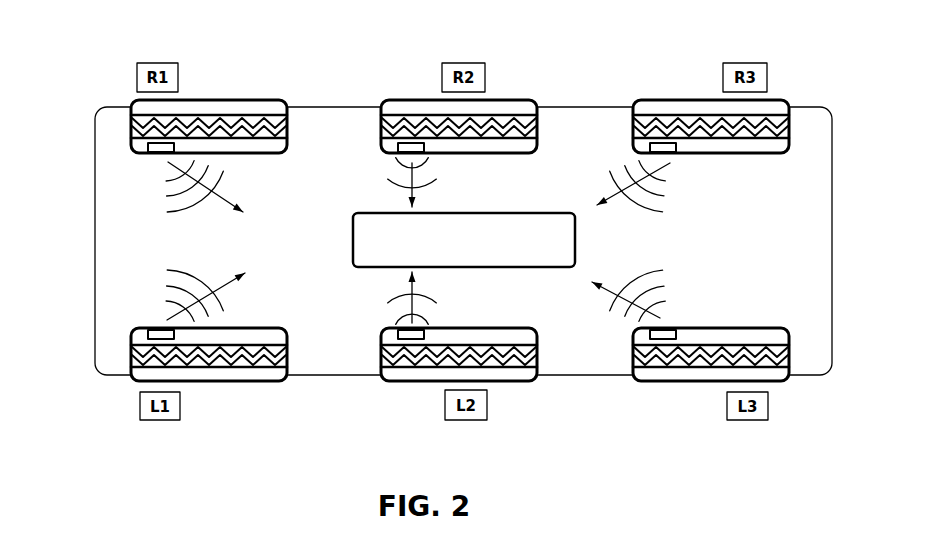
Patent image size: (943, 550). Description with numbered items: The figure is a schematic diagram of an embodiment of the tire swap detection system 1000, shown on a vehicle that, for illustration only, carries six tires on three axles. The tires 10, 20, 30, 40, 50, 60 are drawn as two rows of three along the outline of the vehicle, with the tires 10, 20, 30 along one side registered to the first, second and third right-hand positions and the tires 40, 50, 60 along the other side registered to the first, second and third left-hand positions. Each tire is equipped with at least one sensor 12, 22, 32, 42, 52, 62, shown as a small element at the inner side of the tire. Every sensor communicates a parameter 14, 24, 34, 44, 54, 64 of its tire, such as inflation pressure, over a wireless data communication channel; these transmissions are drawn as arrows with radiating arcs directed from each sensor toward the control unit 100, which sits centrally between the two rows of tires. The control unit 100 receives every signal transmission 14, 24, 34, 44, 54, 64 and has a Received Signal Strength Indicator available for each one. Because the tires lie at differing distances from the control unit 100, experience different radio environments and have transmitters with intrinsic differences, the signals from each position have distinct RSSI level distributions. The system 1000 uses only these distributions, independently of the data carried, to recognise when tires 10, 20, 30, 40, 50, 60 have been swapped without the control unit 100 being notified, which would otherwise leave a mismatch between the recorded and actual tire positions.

The tire swap detection system 1000 is at (103, 60).
The tire 10 is at (207, 128).
The sensor 12 is at (155, 155).
The parameter 14 is at (218, 188).
The tire 20 is at (449, 123).
The sensor 22 is at (400, 155).
The parameter 24 is at (416, 184).
The tire 30 is at (711, 127).
The sensor 32 is at (672, 155).
The parameter 34 is at (625, 186).
The tire 40 is at (211, 358).
The sensor 42 is at (160, 328).
The parameter 44 is at (220, 295).
The tire 50 is at (450, 364).
The sensor 52 is at (400, 328).
The parameter 54 is at (422, 298).
The tire 60 is at (711, 359).
The sensor 62 is at (672, 328).
The parameter 64 is at (619, 295).
The control unit 100 is at (500, 213).